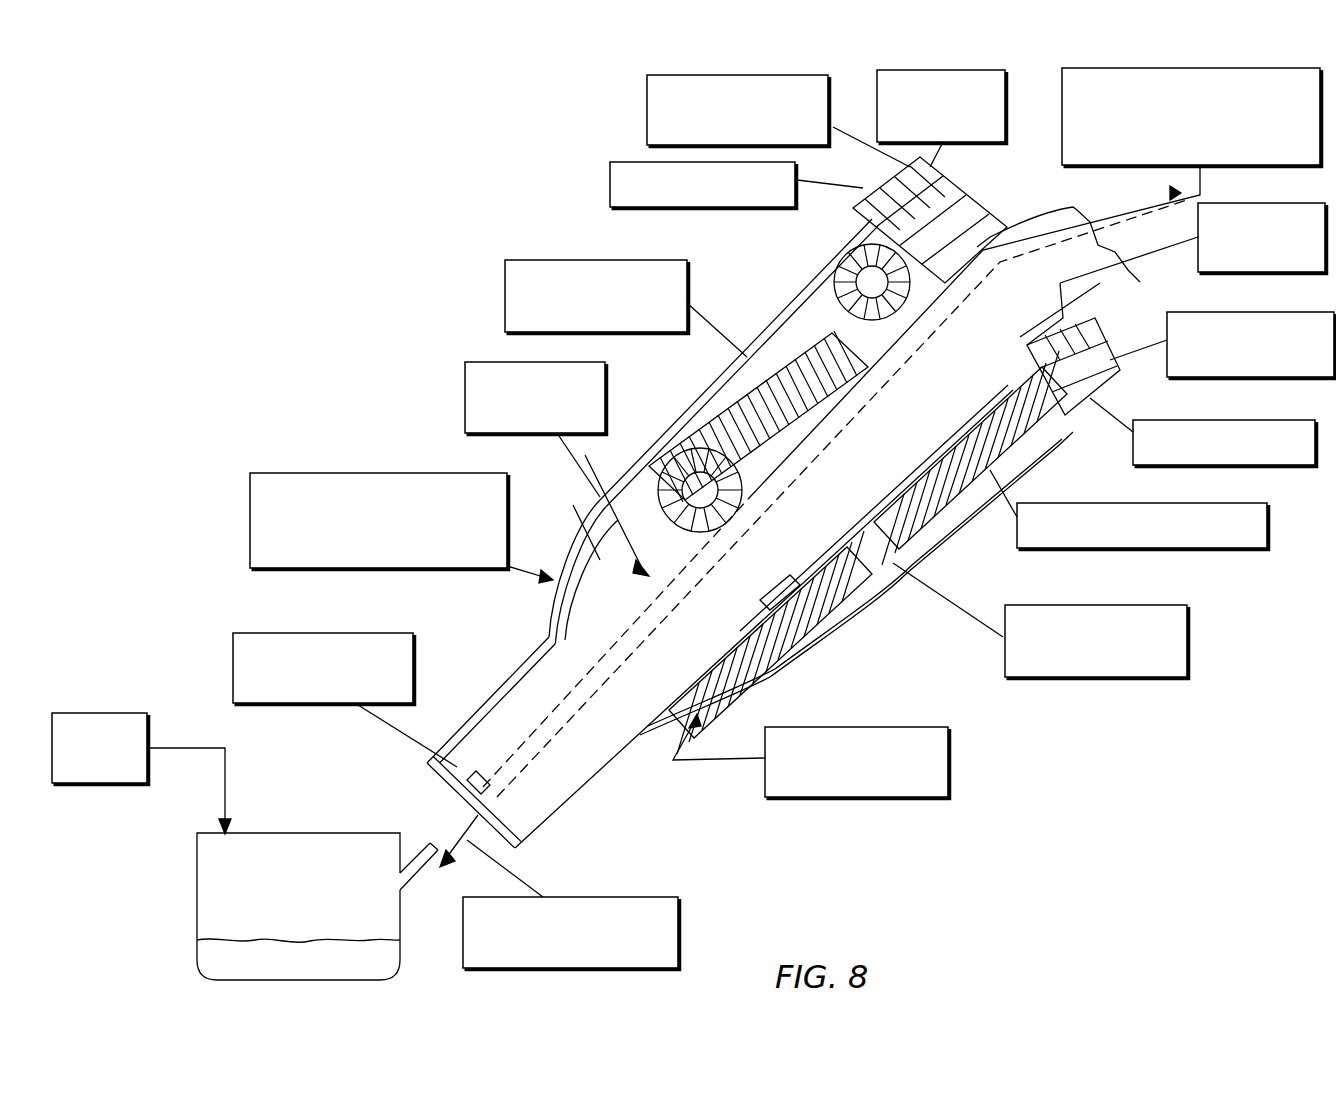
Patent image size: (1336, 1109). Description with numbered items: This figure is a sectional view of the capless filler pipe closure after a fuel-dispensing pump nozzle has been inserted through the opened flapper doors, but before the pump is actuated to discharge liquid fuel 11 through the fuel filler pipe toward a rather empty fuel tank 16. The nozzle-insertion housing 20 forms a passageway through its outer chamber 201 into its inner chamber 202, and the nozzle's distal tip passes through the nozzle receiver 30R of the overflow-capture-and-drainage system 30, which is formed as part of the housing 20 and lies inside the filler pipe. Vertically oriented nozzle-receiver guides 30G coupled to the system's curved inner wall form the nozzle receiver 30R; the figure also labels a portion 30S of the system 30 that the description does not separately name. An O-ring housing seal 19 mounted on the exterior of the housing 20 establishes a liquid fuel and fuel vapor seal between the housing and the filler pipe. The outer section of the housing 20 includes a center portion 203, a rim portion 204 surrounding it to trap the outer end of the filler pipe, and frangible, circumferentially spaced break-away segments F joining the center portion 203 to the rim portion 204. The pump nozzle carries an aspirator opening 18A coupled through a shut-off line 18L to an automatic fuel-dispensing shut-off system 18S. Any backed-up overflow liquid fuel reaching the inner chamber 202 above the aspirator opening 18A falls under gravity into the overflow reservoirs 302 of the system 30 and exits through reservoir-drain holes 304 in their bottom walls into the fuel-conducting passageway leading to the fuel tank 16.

The shut-off line 18L is at (790, 503).
The O-ring housing seal 19 is at (922, 543).
The nozzle-insertion housing 20 is at (779, 300).
The rim portion 204 is at (610, 182).
The frangible break-away segments F is at (647, 105).
The center portion 203 is at (987, 147).
The automatic fuel-dispensing shut-off system 18S is at (1060, 127).
The inner chamber 202 is at (465, 398).
The overflow-capture-and-drainage system 30 is at (293, 472).
The overflow capture sleeve 30S is at (556, 552).
The nozzle-receiver guides 30G is at (772, 597).
The nozzle receiver 30R is at (722, 640).
The outer chamber 201 is at (1207, 549).
The overflow reservoirs 302 is at (1188, 632).
The reservoir-drain holes 304 is at (874, 727).
The fuel tank 16 is at (100, 713).
The aspirator opening 18A is at (233, 665).
The liquid fuel 11 is at (213, 957).